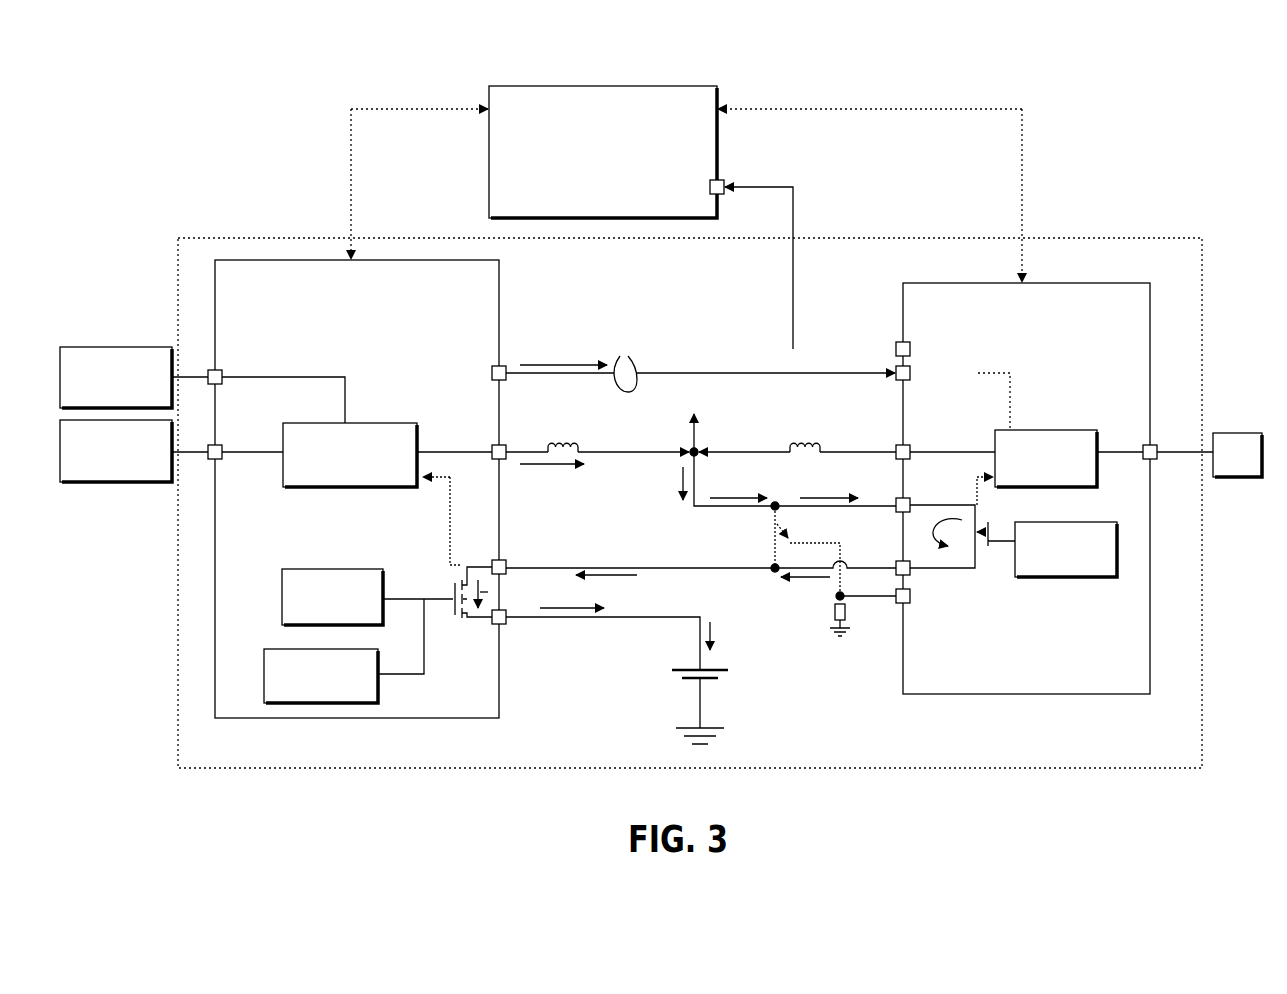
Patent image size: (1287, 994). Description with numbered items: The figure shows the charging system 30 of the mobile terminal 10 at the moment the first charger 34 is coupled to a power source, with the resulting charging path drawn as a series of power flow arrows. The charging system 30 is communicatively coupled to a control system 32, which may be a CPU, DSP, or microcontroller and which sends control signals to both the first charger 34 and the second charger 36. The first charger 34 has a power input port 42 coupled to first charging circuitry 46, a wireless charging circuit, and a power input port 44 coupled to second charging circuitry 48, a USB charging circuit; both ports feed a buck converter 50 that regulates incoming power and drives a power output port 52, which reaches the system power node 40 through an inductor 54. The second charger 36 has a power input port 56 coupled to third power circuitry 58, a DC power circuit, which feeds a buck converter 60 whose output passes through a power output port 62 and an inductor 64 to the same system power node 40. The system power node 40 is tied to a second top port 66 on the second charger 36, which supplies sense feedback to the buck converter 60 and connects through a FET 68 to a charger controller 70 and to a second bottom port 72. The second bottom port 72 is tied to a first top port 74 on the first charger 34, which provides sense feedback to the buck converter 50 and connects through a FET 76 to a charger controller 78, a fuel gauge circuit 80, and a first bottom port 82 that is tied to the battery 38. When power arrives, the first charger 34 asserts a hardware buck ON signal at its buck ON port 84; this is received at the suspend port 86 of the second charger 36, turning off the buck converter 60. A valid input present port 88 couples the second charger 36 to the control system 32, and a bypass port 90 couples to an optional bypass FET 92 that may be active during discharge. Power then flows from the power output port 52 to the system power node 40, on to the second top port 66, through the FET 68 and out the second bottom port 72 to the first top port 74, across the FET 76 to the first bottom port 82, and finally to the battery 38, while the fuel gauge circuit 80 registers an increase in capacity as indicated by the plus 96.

The mobile terminal 10 is at (1118, 146).
The charging system 30 is at (1198, 212).
The control system 32 is at (668, 86).
The first charger 34 is at (432, 260).
The second charger 36 is at (1085, 283).
The battery 38 is at (734, 689).
The system power node 40 is at (708, 447).
The power input port 42 is at (210, 370).
The power input port 44 is at (210, 459).
The first charging circuitry 46 is at (105, 347).
The second charging circuitry 48 is at (102, 482).
The buck converter 50 is at (383, 423).
The power output port 52 is at (506, 447).
The inductor 54 is at (566, 440).
The power input port 56 is at (1157, 447).
The third power circuitry 58 is at (1252, 433).
The buck converter 60 is at (1038, 430).
The power output port 62 is at (910, 448).
The inductor 64 is at (804, 438).
The second top port 66 is at (897, 500).
The FET 68 is at (996, 530).
The charger controller 70 is at (1100, 522).
The second bottom port 72 is at (896, 562).
The first top port 74 is at (506, 560).
The FET 76 is at (446, 578).
The charger controller 78 is at (330, 569).
The fuel gauge circuit 80 is at (270, 649).
The first bottom port 82 is at (506, 624).
The buck ON port 84 is at (506, 366).
The suspend port 86 is at (910, 380).
The valid input present port 88 is at (910, 344).
The bypass port 90 is at (910, 603).
The bypass FET 92 is at (794, 536).
The plus 96 is at (404, 706).